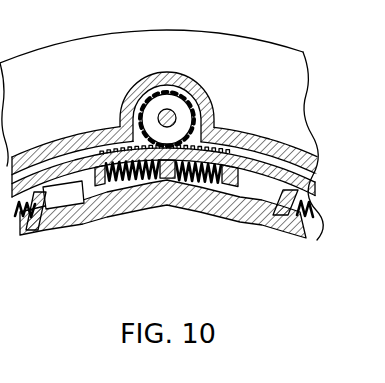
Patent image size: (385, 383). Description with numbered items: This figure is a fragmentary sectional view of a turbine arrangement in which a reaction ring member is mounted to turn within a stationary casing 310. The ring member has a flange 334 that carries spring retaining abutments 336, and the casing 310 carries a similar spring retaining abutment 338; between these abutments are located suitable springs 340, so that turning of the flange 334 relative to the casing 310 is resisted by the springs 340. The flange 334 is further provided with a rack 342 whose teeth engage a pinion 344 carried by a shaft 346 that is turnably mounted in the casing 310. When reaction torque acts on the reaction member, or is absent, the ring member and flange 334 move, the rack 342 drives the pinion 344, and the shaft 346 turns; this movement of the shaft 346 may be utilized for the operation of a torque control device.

The stationary casing 310 is at (300, 50).
The flange 334 is at (63, 171).
The spring retaining abutments 336 is at (97, 181).
The spring retaining abutment 338 is at (42, 195).
The springs 340 is at (121, 204).
The rack 342 is at (210, 101).
The pinion 344 is at (187, 92).
The shaft 346 is at (163, 112).